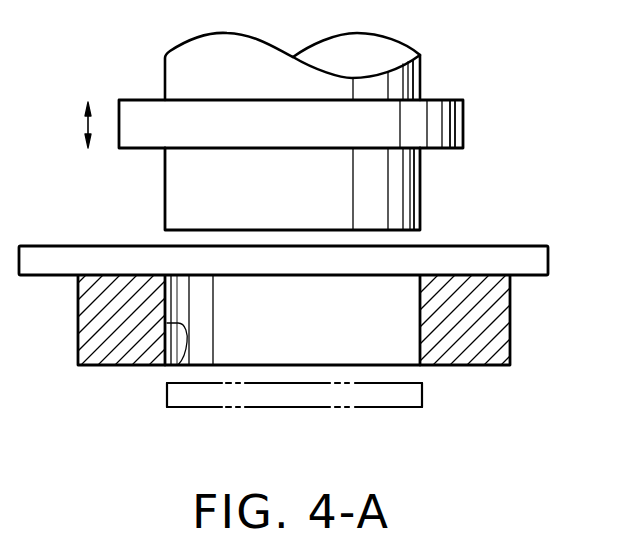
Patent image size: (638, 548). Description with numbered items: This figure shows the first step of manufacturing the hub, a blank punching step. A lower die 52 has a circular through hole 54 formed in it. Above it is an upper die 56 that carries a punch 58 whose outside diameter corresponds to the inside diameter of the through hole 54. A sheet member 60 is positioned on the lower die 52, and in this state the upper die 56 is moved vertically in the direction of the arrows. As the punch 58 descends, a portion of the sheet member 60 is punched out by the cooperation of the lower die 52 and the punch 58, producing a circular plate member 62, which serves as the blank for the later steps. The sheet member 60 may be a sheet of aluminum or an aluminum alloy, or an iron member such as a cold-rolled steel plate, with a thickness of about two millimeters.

The lower die 52 is at (495, 365).
The circular through hole 54 is at (172, 367).
The upper die 56 is at (453, 92).
The punch 58 is at (405, 185).
The sheet member 60 is at (518, 253).
The circular plate member 62 is at (397, 407).